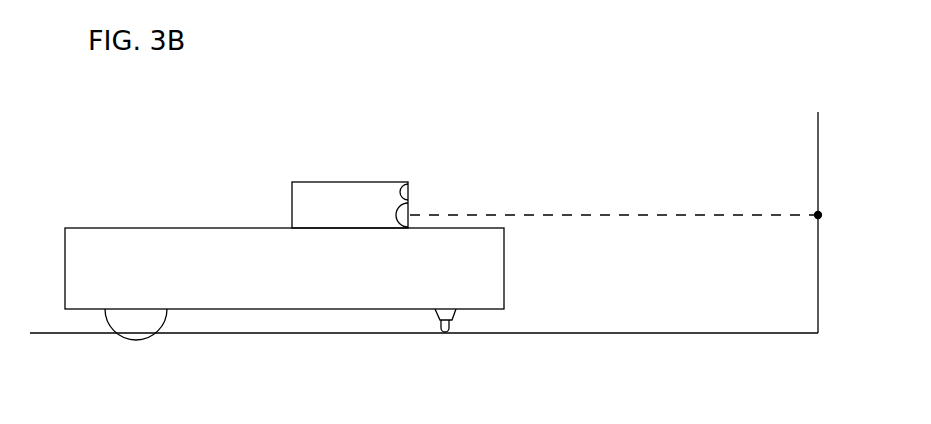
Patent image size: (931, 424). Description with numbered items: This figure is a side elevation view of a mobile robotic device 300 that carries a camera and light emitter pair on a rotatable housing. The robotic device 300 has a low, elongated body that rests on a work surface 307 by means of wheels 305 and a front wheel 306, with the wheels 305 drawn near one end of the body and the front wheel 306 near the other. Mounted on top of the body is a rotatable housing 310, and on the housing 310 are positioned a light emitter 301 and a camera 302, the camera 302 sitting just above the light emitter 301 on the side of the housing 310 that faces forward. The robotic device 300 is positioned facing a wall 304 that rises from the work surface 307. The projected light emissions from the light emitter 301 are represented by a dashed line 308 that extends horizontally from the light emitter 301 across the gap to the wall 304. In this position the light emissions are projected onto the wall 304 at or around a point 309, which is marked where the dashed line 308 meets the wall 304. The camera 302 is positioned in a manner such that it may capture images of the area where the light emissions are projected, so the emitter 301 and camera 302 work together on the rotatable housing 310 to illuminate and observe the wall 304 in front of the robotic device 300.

The robotic device 300 is at (179, 228).
The light emitter 301 is at (394, 215).
The camera 302 is at (409, 192).
The wall 304 is at (843, 222).
The wheels 305 is at (105, 321).
The front wheel 306 is at (458, 322).
The work surface 307 is at (295, 333).
The dashed line 308 is at (614, 230).
The point 309 is at (822, 215).
The rotatable housing 310 is at (352, 182).